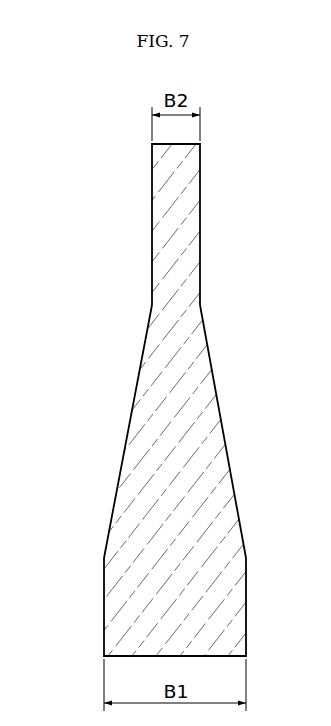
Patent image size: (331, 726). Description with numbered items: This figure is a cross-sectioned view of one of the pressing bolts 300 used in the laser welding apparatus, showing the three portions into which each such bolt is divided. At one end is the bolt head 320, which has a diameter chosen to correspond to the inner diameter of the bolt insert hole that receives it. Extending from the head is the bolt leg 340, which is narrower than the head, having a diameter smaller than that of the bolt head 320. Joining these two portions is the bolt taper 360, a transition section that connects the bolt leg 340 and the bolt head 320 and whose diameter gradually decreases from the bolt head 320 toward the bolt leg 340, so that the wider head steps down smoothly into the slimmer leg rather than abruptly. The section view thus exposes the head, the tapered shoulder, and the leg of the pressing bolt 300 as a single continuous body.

The pressing bolt 300 is at (159, 400).
The bolt head 320 is at (242, 591).
The bolt leg 340 is at (192, 206).
The bolt taper 360 is at (218, 443).